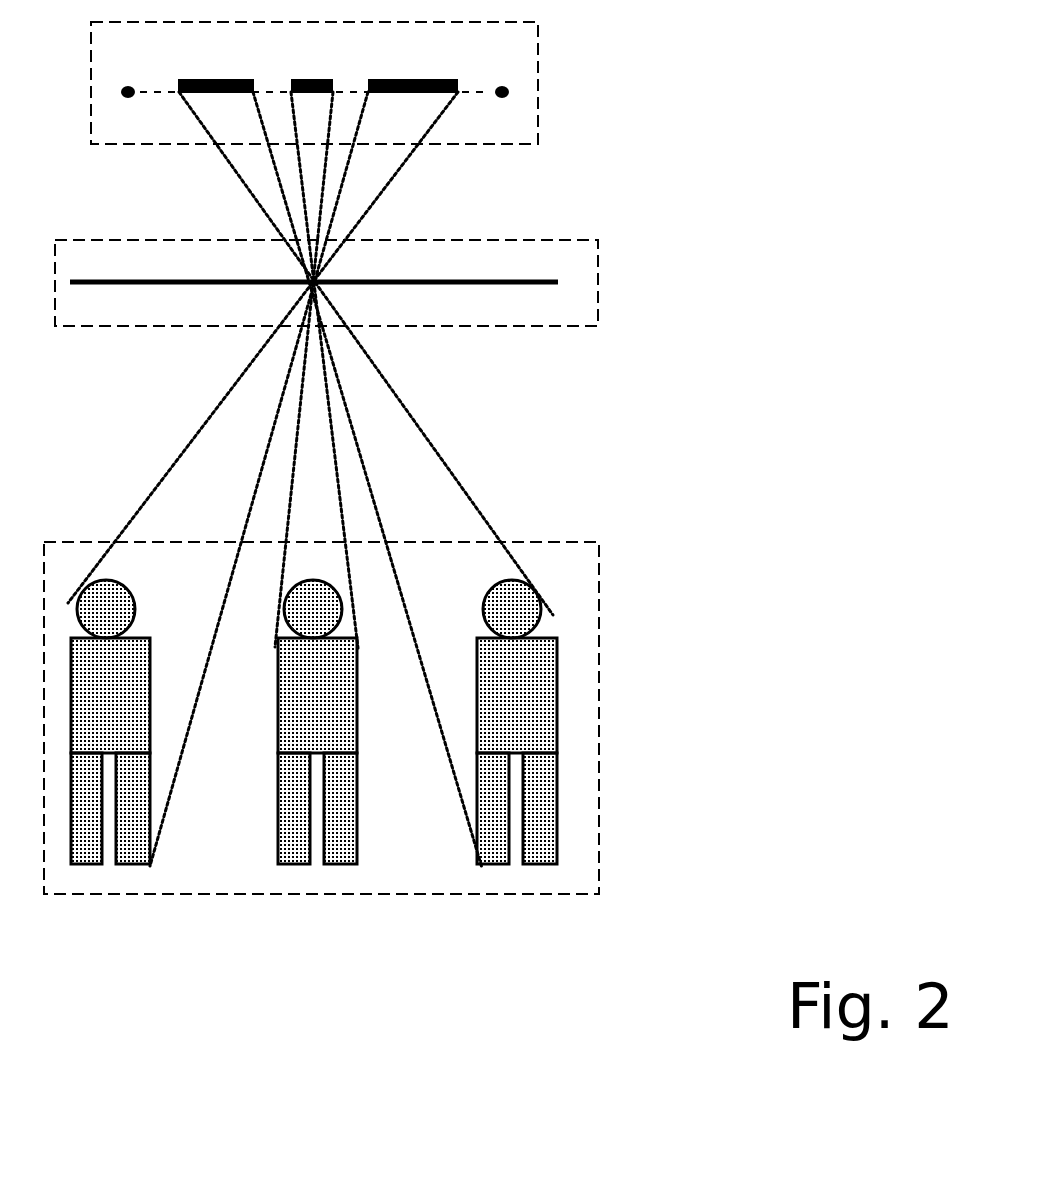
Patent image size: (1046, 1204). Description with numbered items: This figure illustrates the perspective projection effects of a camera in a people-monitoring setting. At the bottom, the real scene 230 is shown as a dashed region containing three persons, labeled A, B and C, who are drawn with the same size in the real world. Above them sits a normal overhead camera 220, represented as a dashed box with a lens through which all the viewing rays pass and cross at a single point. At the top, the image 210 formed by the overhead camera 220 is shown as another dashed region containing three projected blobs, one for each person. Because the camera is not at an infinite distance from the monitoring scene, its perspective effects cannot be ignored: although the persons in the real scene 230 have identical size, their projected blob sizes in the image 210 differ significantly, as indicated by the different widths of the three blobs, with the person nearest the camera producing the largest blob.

The image 210 is at (538, 43).
The overhead camera 220 is at (598, 258).
The real scene 230 is at (599, 565).